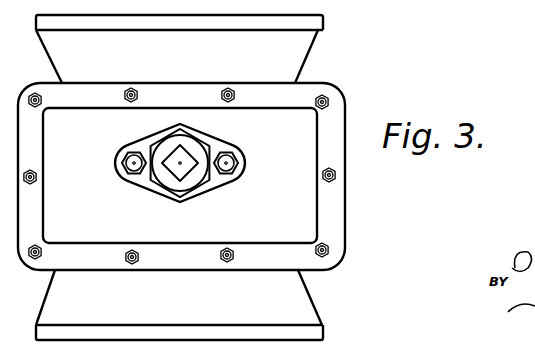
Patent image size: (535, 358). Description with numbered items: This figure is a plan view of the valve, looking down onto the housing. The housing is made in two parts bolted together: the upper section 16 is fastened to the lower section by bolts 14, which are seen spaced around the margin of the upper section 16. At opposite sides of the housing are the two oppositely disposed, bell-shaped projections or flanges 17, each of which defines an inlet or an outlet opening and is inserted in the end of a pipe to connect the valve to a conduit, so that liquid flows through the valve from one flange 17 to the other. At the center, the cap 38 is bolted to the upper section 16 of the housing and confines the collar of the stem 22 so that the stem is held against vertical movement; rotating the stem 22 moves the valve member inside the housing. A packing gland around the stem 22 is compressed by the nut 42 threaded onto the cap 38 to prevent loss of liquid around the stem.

The bolts 14 is at (316, 108).
The upper section 16 is at (310, 206).
The flanges 17 is at (313, 42).
The stem 22 is at (186, 166).
The cap 38 is at (147, 141).
The nut 42 is at (165, 182).